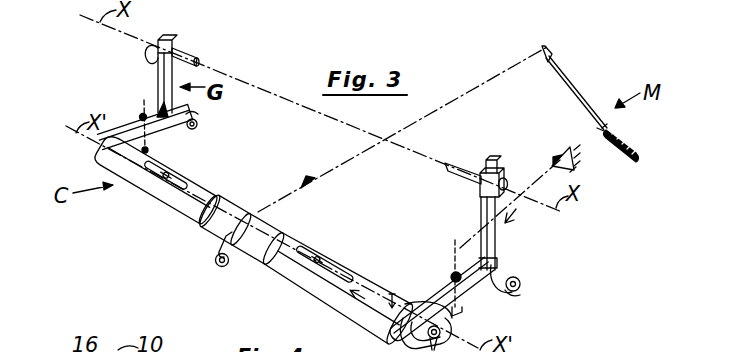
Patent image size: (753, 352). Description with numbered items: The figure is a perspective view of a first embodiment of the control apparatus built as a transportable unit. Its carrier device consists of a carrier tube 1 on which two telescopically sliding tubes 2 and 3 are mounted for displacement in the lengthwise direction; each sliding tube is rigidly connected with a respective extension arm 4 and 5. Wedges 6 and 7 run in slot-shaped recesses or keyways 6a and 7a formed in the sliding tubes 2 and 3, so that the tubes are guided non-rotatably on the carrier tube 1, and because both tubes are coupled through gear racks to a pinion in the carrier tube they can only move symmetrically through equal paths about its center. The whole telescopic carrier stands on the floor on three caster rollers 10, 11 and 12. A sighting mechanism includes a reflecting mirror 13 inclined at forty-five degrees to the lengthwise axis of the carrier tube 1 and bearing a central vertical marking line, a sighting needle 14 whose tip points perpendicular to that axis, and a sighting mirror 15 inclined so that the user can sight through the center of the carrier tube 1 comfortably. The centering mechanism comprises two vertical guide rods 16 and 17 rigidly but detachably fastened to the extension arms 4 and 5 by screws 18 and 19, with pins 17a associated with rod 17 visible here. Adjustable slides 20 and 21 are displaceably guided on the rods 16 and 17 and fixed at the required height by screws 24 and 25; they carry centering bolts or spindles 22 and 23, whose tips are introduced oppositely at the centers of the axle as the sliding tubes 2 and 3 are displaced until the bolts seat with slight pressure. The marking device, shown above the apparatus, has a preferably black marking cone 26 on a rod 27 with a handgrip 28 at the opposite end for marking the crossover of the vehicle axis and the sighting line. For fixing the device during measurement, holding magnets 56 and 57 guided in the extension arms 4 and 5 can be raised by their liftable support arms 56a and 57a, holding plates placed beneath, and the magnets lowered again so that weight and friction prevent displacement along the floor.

The carrier tube 1 is at (262, 224).
The sliding tube 2 is at (157, 190).
The sliding tube 3 is at (322, 292).
The extension arm 4 is at (132, 130).
The extension arm 5 is at (433, 290).
The wedge 6 is at (181, 171).
The slot-shaped recess or keyway 6a is at (175, 191).
The wedge 7 is at (330, 263).
The slot-shaped recess or keyway 7a is at (315, 251).
The caster roller 10 is at (201, 124).
The caster roller 11 is at (212, 262).
The caster roller 12 is at (523, 282).
The reflecting square or mirror 13 is at (244, 211).
The sighting needle 14 is at (392, 294).
The sighting mirror 15 is at (446, 331).
The vertical guide rod 16 is at (158, 81).
The vertical guide rod 17 is at (480, 212).
The pin 17a is at (512, 292).
The screw 18 is at (158, 108).
The screw 19 is at (496, 263).
The adjustable slide 20 is at (157, 63).
The adjustable slide 21 is at (503, 170).
The centering bolt or spindle 22 is at (198, 63).
The centering bolt or spindle 23 is at (456, 164).
The screw 24 is at (156, 46).
The screw 25 is at (507, 182).
The marking cone 26 is at (553, 50).
The rod 27 is at (583, 95).
The handgrip 28 is at (630, 142).
The holding magnet 56 is at (149, 150).
The liftable support arm 56a is at (140, 116).
The holding magnet 57 is at (465, 306).
The liftable support arm 57a is at (452, 262).